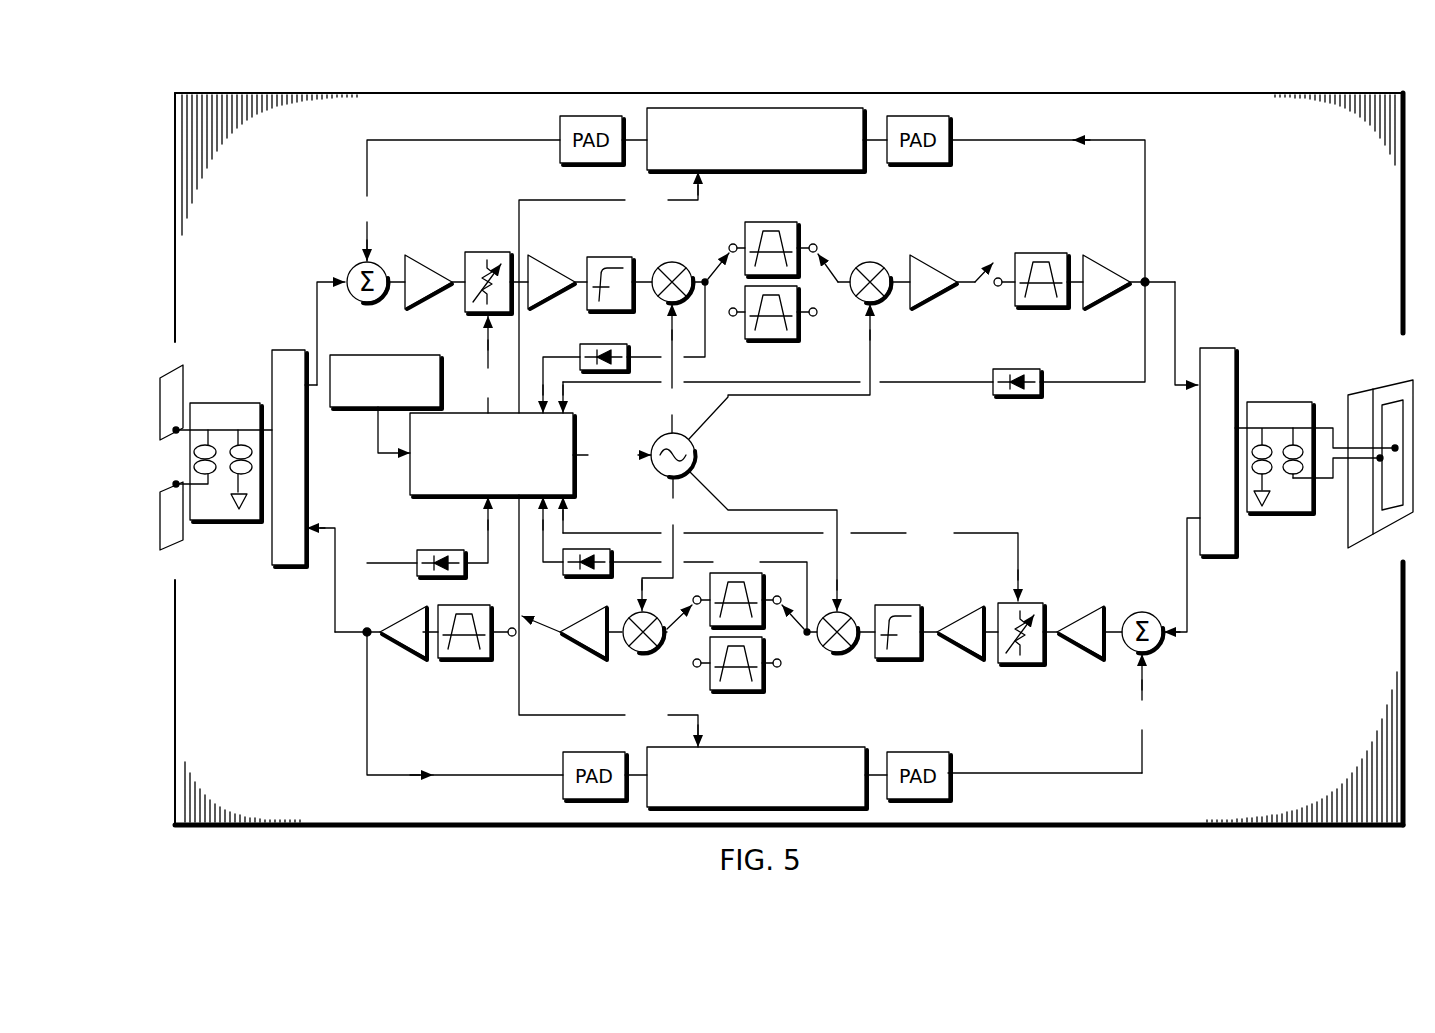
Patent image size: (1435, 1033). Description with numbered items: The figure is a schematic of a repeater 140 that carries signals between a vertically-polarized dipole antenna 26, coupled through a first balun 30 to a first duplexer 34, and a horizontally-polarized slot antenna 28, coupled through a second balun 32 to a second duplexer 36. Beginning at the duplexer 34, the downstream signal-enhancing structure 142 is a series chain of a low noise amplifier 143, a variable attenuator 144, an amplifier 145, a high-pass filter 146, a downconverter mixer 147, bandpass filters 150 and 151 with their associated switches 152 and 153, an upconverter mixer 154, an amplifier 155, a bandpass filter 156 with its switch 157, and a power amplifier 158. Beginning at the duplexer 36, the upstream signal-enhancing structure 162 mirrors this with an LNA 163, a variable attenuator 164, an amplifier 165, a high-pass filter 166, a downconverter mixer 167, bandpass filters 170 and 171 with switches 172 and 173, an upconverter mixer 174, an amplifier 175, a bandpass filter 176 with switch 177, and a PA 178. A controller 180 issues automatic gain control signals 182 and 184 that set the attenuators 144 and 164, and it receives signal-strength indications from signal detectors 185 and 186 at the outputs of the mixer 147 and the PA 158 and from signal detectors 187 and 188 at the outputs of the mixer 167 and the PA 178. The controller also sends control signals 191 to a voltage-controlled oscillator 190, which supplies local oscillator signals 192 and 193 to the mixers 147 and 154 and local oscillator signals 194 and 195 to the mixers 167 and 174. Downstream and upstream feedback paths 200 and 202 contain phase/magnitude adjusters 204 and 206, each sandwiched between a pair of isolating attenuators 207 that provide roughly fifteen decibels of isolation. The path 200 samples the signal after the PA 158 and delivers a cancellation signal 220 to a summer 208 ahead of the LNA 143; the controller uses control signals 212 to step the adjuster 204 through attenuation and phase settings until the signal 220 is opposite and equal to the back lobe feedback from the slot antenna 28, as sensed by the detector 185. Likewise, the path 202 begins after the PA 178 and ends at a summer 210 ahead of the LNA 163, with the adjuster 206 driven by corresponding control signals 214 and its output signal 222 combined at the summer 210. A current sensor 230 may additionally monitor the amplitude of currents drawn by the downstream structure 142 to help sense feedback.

The repeater 140 is at (347, 90).
The downstream signal-enhancing structure 142 is at (470, 212).
The low noise amplifier 143 is at (435, 288).
The variable attenuator 144 is at (496, 270).
The amplifier 145 is at (557, 272).
The high-pass filter 146 is at (619, 269).
The downconverter mixer 147 is at (680, 265).
The bandpass filter 150 is at (777, 238).
The bandpass filter 151 is at (773, 328).
The switch 152 is at (722, 249).
The switch 153 is at (827, 250).
The upconverter mixer 154 is at (880, 265).
The amplifier 155 is at (942, 270).
The bandpass filter 156 is at (1049, 266).
The switch 157 is at (990, 259).
The power amplifier 158 is at (1129, 286).
The upstream signal-enhancing structure 162 is at (1050, 705).
The low noise amplifier 163 is at (1073, 632).
The variable attenuator 164 is at (1018, 649).
The amplifier 165 is at (952, 640).
The high-pass filter 166 is at (890, 649).
The downconverter mixer 167 is at (831, 651).
The bandpass filter 170 is at (732, 588).
The bandpass filter 171 is at (732, 678).
The switch 172 is at (789, 647).
The switch 173 is at (688, 647).
The upconverter mixer 174 is at (637, 651).
The amplifier 175 is at (577, 639).
The bandpass filter 176 is at (457, 649).
The switch 177 is at (535, 617).
The power amplifier 178 is at (367, 605).
The controller 180 is at (492, 455).
The automatic gain control signal 182 is at (488, 364).
The automatic gain control signal 184 is at (790, 549).
The signal detector 185 is at (624, 349).
The signal detector 186 is at (854, 349).
The signal detector 187 is at (675, 564).
The signal detector 188 is at (427, 537).
The voltage-controlled oscillator 190 is at (703, 455).
The control signals 191 is at (612, 455).
The local oscillator signal 192 is at (660, 368).
The local oscillator signal 193 is at (779, 371).
The local oscillator signal 194 is at (763, 541).
The local oscillator signal 195 is at (677, 544).
The downstream circuit feedback path 200 is at (1157, 172).
The upstream circuit feedback path 202 is at (360, 742).
The phase/magnitude adjuster 204 is at (760, 146).
The phase/magnitude adjuster 206 is at (760, 768).
The isolating attenuator 207 is at (766, 458).
The summer 208 is at (355, 323).
The summer 210 is at (1151, 585).
The control signals 212 is at (608, 292).
The adjuster control line 214 is at (608, 621).
The cancellation signal 220 is at (452, 200).
The cancellation signal input 222 is at (1058, 713).
The current sensor 230 is at (378, 404).
The vertically-polarized dipole antenna 26 is at (197, 368).
The horizontally-polarized slot antenna 28 is at (1378, 372).
The first balun 30 is at (224, 462).
The second balun 32 is at (1316, 458).
The first duplexer 34 is at (289, 443).
The second duplexer 36 is at (1218, 438).